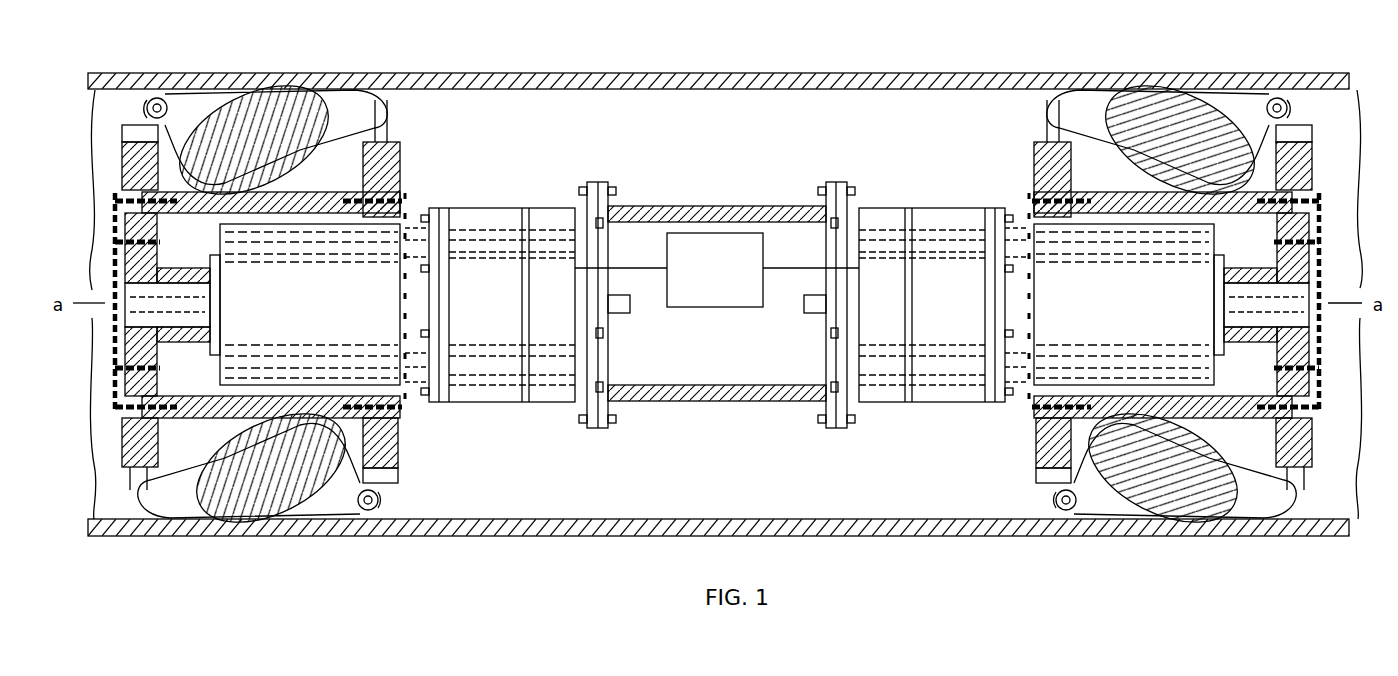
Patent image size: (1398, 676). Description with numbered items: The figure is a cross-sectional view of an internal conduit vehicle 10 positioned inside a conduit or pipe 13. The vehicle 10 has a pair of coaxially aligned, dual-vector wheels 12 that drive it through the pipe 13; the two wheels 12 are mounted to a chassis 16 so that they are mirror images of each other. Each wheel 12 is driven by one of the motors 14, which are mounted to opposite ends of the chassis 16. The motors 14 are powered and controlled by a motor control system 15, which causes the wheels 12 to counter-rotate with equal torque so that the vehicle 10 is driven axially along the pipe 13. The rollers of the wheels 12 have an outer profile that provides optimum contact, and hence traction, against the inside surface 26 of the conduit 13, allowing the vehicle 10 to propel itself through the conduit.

The internal conduit vehicle 10 is at (718, 190).
The dual-vector wheels 12 is at (395, 185).
The conduit or pipe 13 is at (667, 82).
The motors 14 is at (482, 220).
The motor control system 15 is at (840, 423).
The chassis 16 is at (718, 402).
The inside surface 26 is at (728, 525).